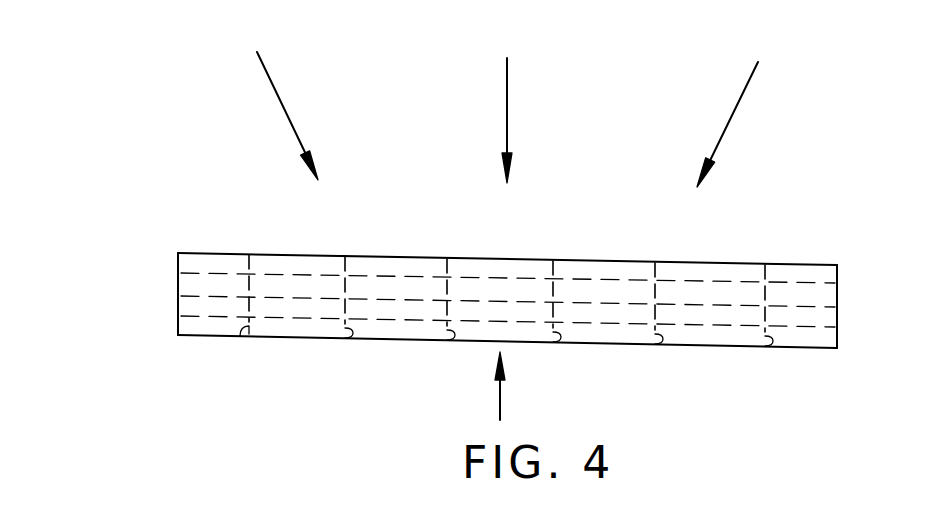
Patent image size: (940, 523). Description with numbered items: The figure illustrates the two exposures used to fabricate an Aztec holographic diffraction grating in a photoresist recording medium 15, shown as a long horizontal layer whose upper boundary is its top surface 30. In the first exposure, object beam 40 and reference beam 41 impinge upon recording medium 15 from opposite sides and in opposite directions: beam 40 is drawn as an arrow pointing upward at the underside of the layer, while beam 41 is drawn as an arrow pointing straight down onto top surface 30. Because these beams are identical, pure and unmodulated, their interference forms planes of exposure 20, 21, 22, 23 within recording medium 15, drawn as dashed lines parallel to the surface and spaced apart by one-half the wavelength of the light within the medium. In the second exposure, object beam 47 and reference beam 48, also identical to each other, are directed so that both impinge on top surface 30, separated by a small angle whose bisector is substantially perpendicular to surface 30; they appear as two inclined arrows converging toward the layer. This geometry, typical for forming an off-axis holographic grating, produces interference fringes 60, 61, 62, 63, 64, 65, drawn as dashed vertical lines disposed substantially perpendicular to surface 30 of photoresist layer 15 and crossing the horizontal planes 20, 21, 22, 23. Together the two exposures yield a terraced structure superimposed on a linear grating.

The recording medium 15 is at (188, 336).
The plane of exposure 20 is at (826, 277).
The plane of exposure 21 is at (826, 301).
The plane of exposure 22 is at (826, 322).
The plane of exposure 23 is at (826, 343).
The top surface 30 is at (220, 253).
The object beam 40 is at (501, 397).
The reference beam 41 is at (507, 85).
The object beam 47 is at (273, 83).
The reference beam 48 is at (747, 90).
The interference fringe 60 is at (241, 337).
The interference fringe 61 is at (349, 339).
The interference fringe 62 is at (451, 341).
The interference fringe 63 is at (557, 343).
The interference fringe 64 is at (659, 345).
The interference fringe 65 is at (769, 347).